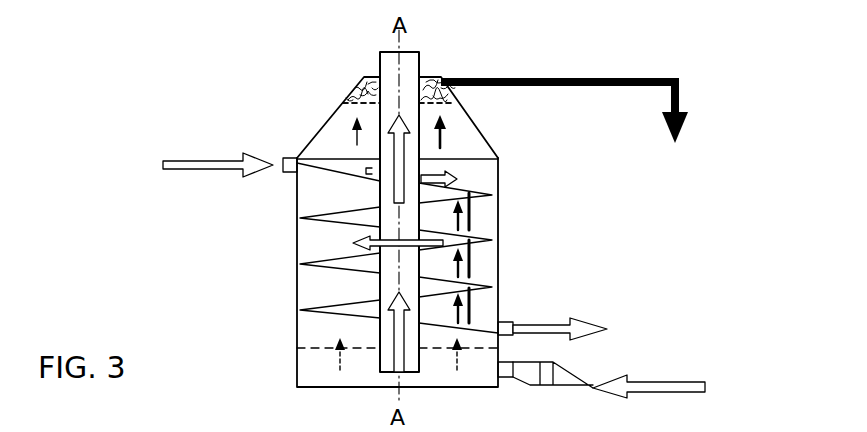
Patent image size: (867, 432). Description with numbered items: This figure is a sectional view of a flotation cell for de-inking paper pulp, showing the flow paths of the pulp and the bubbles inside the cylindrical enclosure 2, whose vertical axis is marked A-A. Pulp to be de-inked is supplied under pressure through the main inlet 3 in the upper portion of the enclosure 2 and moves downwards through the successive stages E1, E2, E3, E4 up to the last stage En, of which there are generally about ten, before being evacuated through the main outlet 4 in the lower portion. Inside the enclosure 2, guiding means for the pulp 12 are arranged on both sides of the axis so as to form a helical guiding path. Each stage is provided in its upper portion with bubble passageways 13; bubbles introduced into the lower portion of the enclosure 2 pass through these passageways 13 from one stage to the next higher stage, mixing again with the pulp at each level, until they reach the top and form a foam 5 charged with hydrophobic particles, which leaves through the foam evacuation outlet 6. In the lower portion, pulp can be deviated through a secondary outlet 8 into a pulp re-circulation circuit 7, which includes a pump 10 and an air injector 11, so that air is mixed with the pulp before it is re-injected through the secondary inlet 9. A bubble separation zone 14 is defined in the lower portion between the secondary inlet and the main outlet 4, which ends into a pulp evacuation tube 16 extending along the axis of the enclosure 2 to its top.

The enclosure 2 is at (296, 245).
The main inlet 3 is at (290, 159).
The main outlet 4 is at (378, 368).
The foam 5 is at (362, 78).
The foam evacuation outlet 6 is at (433, 76).
The pulp re-circulation circuit 7 is at (690, 381).
The secondary outlet 8 is at (512, 322).
The secondary inlet 9 is at (513, 362).
The pump 10 is at (785, 0).
The air injector 11 is at (578, 374).
The guiding means for the pulp 12 is at (330, 212).
The bubble passageways 13 is at (460, 190).
The bubble separation zone 14 is at (323, 345).
The pulp evacuation tube 16 is at (398, 74).
The stage En is at (303, 362).
The stage E1 is at (490, 181).
The stage E2 is at (490, 213).
The stage E3 is at (487, 257).
The stage E4 is at (490, 301).